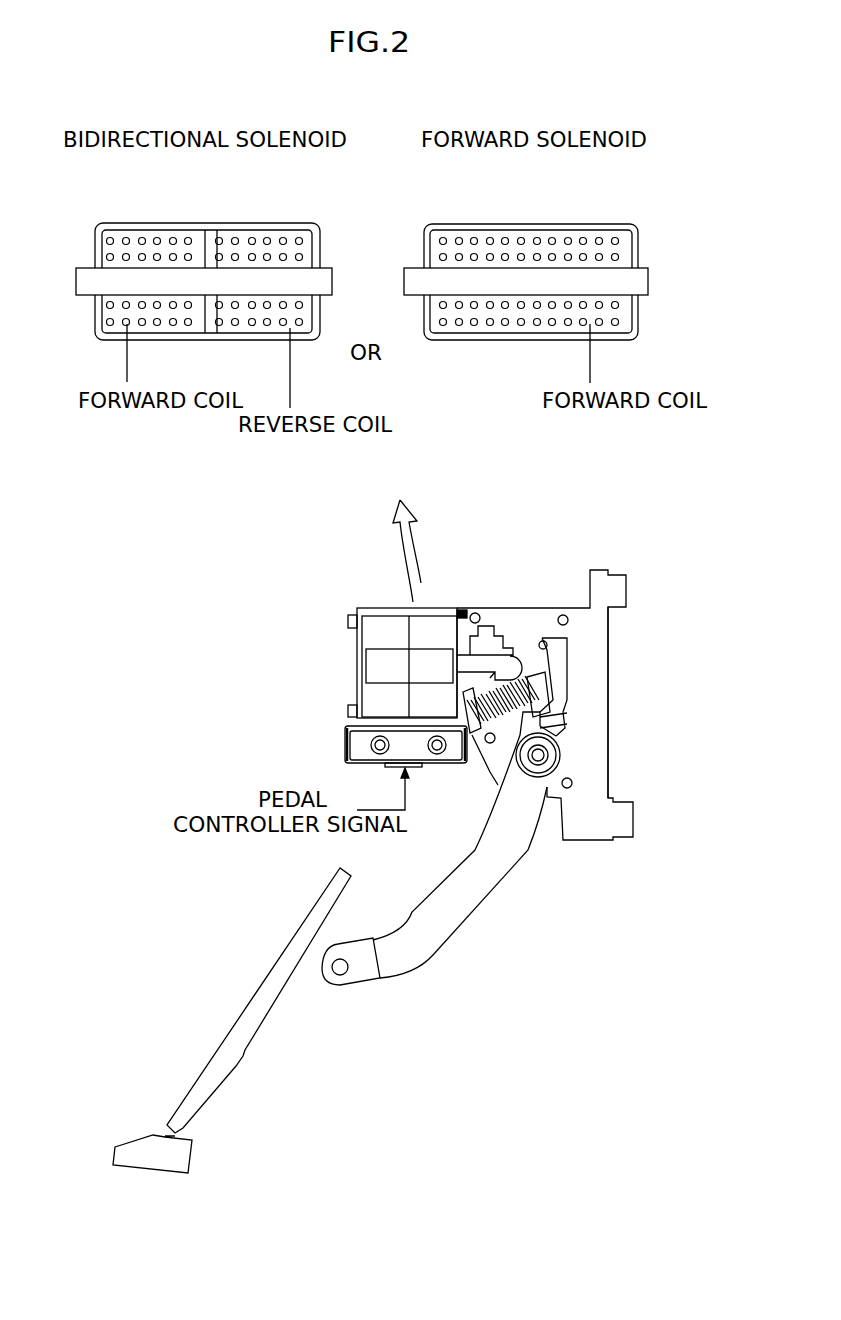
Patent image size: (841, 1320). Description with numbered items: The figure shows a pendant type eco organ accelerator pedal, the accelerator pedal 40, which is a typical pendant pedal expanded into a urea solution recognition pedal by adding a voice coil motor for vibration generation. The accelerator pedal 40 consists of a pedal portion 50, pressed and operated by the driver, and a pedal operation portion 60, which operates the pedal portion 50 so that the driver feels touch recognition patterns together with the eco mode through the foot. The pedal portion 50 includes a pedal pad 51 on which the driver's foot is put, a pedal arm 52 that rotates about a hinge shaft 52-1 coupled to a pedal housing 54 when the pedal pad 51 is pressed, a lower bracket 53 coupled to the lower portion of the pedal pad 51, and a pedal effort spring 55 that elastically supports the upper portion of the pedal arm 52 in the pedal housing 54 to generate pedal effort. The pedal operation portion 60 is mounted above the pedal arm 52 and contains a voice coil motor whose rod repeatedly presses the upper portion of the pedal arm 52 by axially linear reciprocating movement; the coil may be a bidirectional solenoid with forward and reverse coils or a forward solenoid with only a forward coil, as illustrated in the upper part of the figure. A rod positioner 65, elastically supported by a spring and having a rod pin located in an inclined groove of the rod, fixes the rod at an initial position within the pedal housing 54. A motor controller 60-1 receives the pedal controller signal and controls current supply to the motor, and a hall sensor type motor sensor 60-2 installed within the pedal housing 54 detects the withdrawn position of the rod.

The accelerator pedal 40 is at (199, 942).
The pedal portion 50 is at (440, 983).
The pedal pad 51 is at (258, 1013).
The pedal arm 52 is at (537, 808).
The hinge shaft 52-1 is at (548, 757).
The lower bracket 53 is at (178, 1158).
The pedal housing 54 is at (610, 695).
The pedal effort spring 55 is at (512, 720).
The pedal operation portion 60 is at (376, 663).
The motor controller 60-1 is at (343, 744).
The motor sensor 60-2 is at (462, 610).
The rod positioner 65 is at (487, 637).